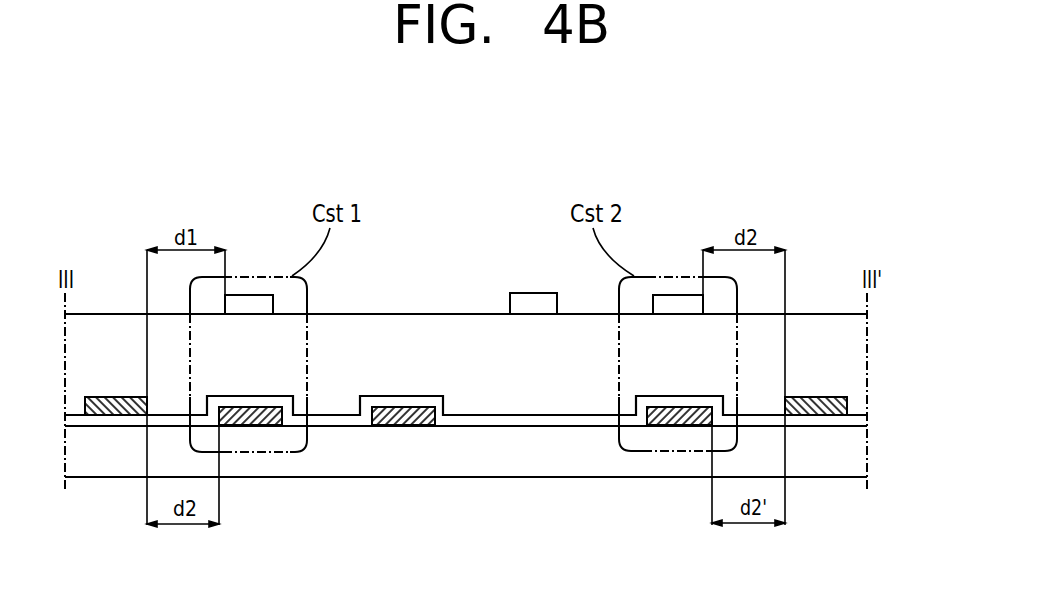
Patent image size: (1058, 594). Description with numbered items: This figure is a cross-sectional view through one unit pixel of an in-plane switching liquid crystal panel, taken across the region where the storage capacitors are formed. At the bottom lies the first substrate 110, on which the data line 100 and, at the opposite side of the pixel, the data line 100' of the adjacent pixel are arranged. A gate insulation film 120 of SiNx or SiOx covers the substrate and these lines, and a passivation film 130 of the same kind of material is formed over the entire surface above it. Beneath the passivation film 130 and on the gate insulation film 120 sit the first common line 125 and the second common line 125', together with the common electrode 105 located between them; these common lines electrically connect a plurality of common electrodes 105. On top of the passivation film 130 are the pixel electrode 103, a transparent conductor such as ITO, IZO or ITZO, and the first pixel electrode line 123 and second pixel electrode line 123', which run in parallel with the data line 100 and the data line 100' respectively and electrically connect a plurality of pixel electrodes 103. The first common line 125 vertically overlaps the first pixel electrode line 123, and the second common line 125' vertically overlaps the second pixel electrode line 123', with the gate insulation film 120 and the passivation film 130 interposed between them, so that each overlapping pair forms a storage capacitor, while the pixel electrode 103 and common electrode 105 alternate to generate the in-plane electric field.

The data line 100 is at (115, 482).
The data line 100' is at (834, 482).
The pixel electrode 103 is at (530, 300).
The common electrode 105 is at (407, 425).
The first substrate 110 is at (858, 455).
The gate insulation film 120 is at (858, 419).
The first pixel electrode line 123 is at (249, 263).
The second pixel electrode line 123' is at (678, 263).
The first common line 125 is at (256, 487).
The second common line 125' is at (663, 487).
The passivation film 130 is at (855, 350).